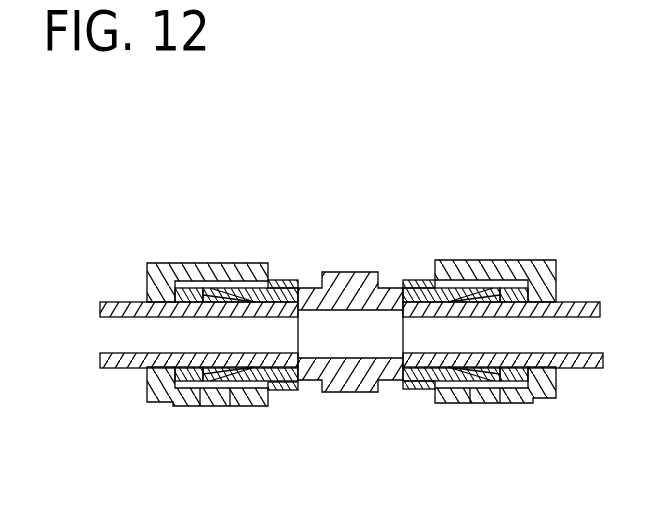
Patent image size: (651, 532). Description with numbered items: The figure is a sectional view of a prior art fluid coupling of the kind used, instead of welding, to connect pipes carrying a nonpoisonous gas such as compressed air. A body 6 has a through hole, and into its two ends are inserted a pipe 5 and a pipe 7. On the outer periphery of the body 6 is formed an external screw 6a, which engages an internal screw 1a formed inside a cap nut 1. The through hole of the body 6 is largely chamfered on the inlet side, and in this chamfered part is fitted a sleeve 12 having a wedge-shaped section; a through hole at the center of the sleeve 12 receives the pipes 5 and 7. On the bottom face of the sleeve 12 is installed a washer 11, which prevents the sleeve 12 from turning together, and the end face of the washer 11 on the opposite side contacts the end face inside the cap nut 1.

The cap nut 1 is at (158, 263).
The internal screw 1a is at (255, 392).
The pipe 5 is at (113, 368).
The body 6 is at (338, 272).
The external screw 6a is at (278, 390).
The pipe 7 is at (592, 370).
The washer 11 is at (172, 263).
The sleeve 12 is at (228, 263).